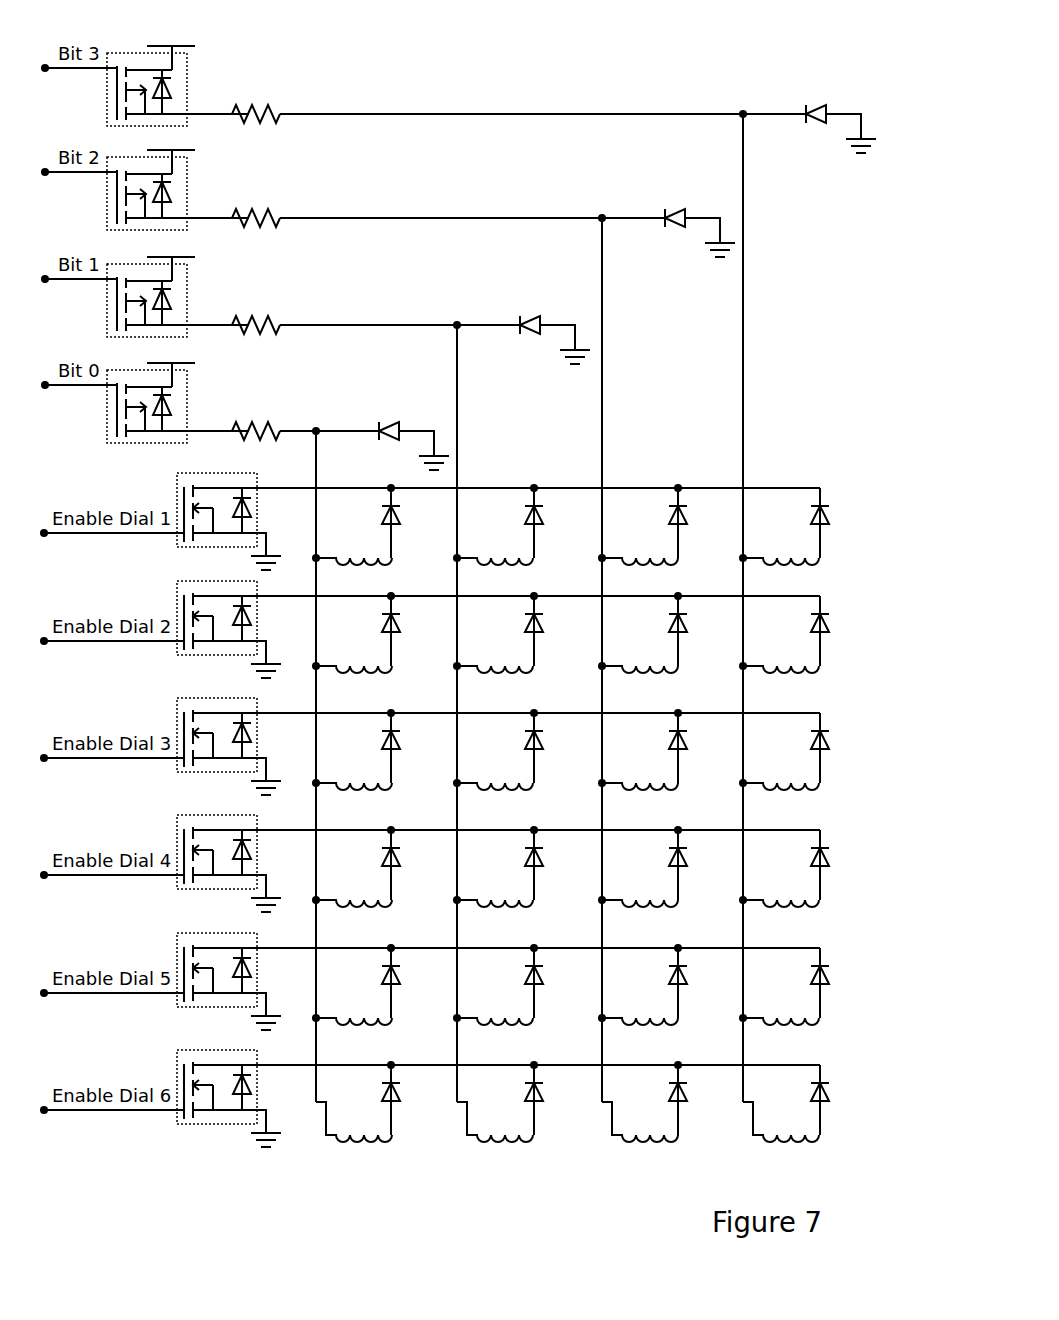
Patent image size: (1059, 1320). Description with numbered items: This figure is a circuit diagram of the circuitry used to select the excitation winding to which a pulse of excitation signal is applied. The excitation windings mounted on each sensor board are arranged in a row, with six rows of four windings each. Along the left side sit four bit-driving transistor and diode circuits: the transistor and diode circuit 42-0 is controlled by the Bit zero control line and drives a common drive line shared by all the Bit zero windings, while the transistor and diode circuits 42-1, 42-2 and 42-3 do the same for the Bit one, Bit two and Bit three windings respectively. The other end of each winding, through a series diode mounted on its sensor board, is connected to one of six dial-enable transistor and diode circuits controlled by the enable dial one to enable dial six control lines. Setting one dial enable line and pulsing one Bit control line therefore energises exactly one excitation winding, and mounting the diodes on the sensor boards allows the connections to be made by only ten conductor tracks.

The transistor and diode circuit 42-3 is at (178, 75).
The transistor and diode circuit 42-2 is at (178, 179).
The transistor and diode circuit 42-1 is at (178, 286).
The transistor and diode circuit 42-0 is at (178, 392).